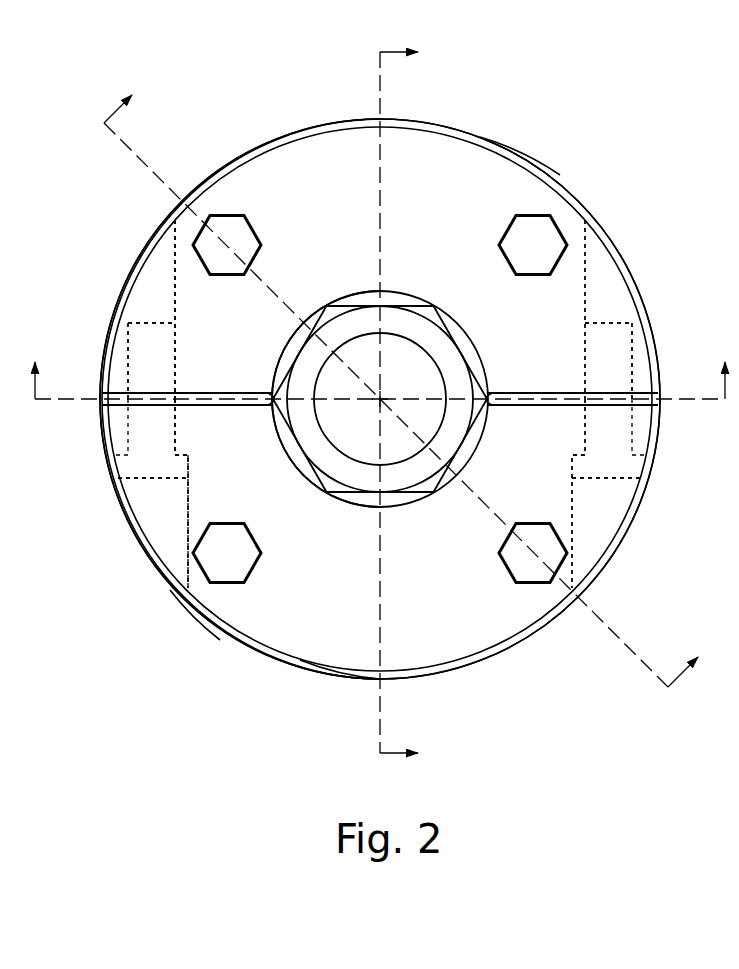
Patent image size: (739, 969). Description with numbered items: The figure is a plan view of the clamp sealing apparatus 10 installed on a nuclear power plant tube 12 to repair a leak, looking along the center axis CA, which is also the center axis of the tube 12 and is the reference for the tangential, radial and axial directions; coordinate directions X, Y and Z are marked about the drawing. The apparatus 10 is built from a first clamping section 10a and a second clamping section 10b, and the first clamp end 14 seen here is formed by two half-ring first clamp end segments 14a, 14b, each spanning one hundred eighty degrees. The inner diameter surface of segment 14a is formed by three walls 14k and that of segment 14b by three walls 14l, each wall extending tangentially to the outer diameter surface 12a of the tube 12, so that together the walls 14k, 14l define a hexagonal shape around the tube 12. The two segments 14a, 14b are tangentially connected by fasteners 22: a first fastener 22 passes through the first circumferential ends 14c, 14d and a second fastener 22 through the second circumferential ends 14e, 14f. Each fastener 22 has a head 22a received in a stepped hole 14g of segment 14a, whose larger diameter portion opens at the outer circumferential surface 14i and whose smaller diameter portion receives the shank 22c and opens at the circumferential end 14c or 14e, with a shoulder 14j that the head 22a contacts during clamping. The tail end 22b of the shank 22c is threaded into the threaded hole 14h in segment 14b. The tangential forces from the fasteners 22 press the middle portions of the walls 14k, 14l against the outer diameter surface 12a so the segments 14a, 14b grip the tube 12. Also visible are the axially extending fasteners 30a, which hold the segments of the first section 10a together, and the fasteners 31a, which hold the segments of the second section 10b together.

The clamp sealing apparatus 10 is at (234, 758).
The first clamping section 10a is at (218, 645).
The second clamping section 10b is at (256, 135).
The tube 12 is at (380, 397).
The outer diameter surface 12a is at (427, 323).
The first clamp end 14 is at (148, 225).
The first clamp end segment 14a is at (272, 640).
The first clamp end segment 14b is at (505, 140).
The first circumferential end 14c is at (540, 406).
The first circumferential end 14d is at (540, 393).
The second circumferential end 14e is at (242, 408).
The second circumferential end 14f is at (232, 393).
The hole 14g is at (190, 513).
The hole 14h is at (175, 282).
The outer circumferential surface 14i is at (195, 610).
The shoulder 14j is at (173, 455).
The walls 14k is at (305, 457).
The walls 14l is at (305, 322).
The fastener 22 is at (112, 434).
The head 22a is at (155, 470).
The tail end 22b is at (142, 322).
The shank 22c is at (152, 358).
The fasteners 30a is at (270, 575).
The fasteners 31a is at (275, 216).
The center axis CA is at (378, 403).
The X axis X is at (419, 401).
The Y axis Y is at (416, 370).
The Z axis Z is at (380, 357).